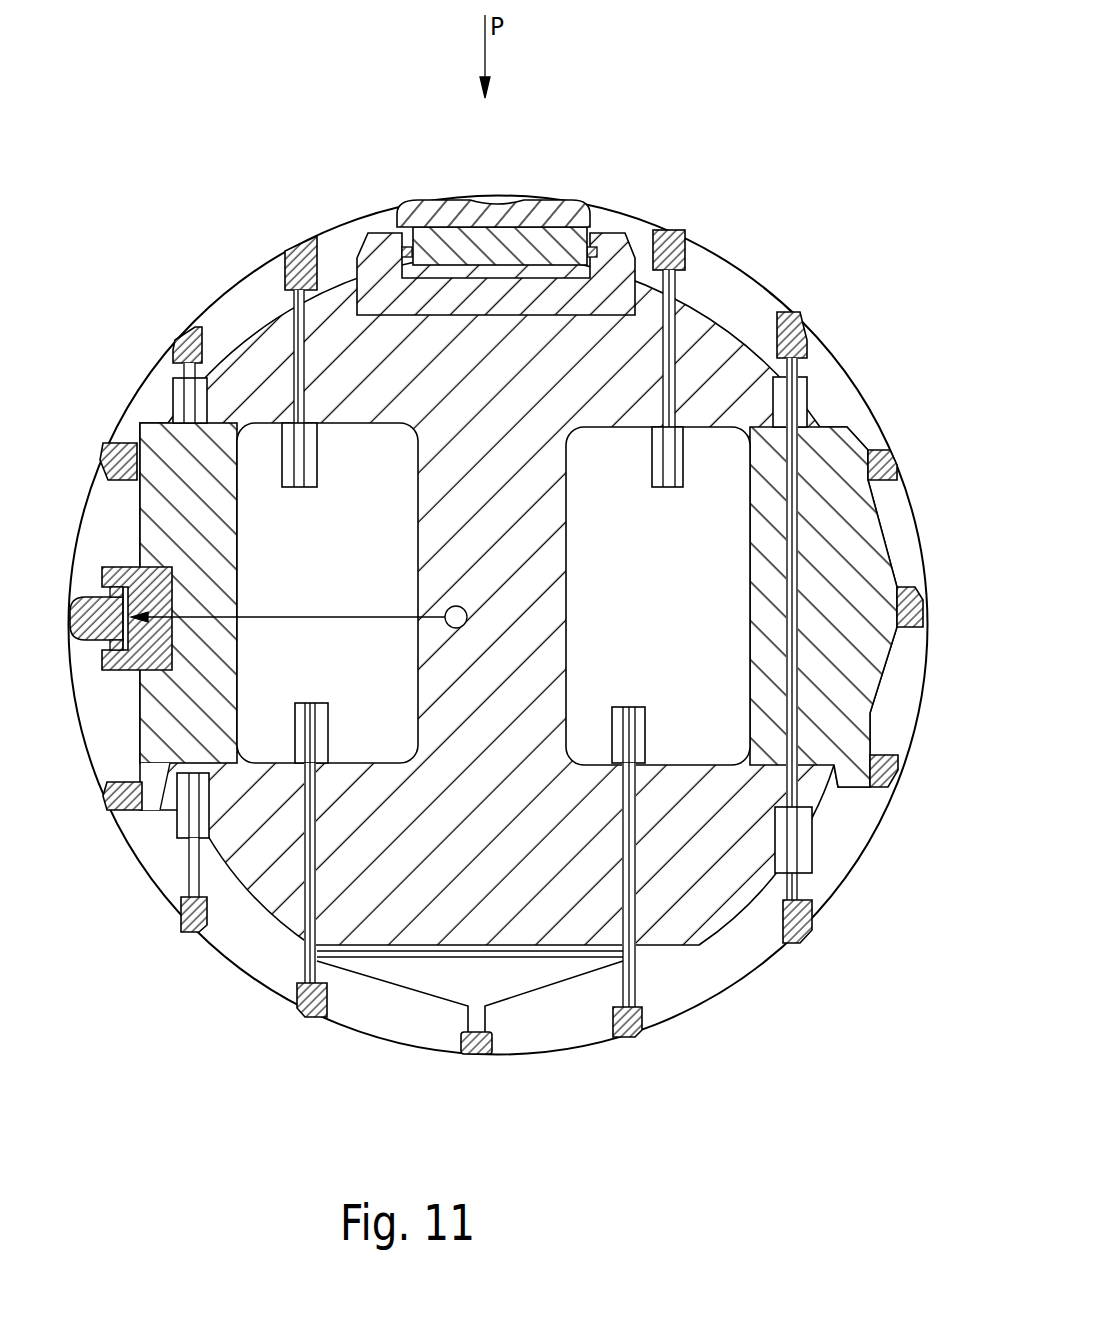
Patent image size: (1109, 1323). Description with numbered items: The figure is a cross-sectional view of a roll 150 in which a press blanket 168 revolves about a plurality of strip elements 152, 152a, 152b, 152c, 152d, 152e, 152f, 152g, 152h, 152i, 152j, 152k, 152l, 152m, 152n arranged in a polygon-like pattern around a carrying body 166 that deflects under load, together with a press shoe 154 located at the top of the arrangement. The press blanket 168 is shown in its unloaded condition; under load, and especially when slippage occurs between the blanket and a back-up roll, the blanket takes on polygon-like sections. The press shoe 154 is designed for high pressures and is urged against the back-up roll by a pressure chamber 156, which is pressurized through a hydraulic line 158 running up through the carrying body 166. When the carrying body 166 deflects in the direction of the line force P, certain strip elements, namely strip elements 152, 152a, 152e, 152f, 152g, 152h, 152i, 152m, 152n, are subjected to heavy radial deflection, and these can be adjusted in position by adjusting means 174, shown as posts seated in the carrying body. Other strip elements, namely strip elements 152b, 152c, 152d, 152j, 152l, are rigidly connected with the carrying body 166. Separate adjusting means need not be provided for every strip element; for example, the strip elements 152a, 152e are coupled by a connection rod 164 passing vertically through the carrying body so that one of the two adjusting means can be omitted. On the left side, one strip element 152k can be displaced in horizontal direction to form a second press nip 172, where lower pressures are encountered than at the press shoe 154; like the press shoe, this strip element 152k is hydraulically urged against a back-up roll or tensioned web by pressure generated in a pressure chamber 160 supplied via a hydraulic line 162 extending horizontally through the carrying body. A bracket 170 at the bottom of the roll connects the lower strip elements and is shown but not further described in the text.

The roll 150 is at (634, 165).
The strip element 152 is at (673, 235).
The strip element 152a is at (800, 322).
The strip element 152b is at (892, 457).
The strip element 152c is at (913, 587).
The strip element 152d is at (897, 787).
The strip element 152e is at (800, 927).
The strip element 152f is at (633, 1035).
The strip element 152g is at (480, 1057).
The strip element 152h is at (312, 1015).
The strip element 152i is at (192, 927).
The strip element 152j is at (107, 847).
The strip element 152k is at (96, 784).
The strip element 152l is at (118, 442).
The strip element 152m is at (190, 327).
The strip element 152n is at (300, 240).
The press shoe 154 is at (442, 198).
The pressure chamber 156 is at (513, 272).
The hydraulic line 158 is at (457, 420).
The pressure chamber 160 is at (127, 600).
The hydraulic line 162 is at (277, 617).
The connection rod 164 is at (787, 575).
The carrying body 166 is at (455, 489).
The press blanket 168 is at (247, 265).
The bracket 170 is at (533, 973).
The second press nip 172 is at (70, 583).
The adjusting means 174 is at (308, 460).